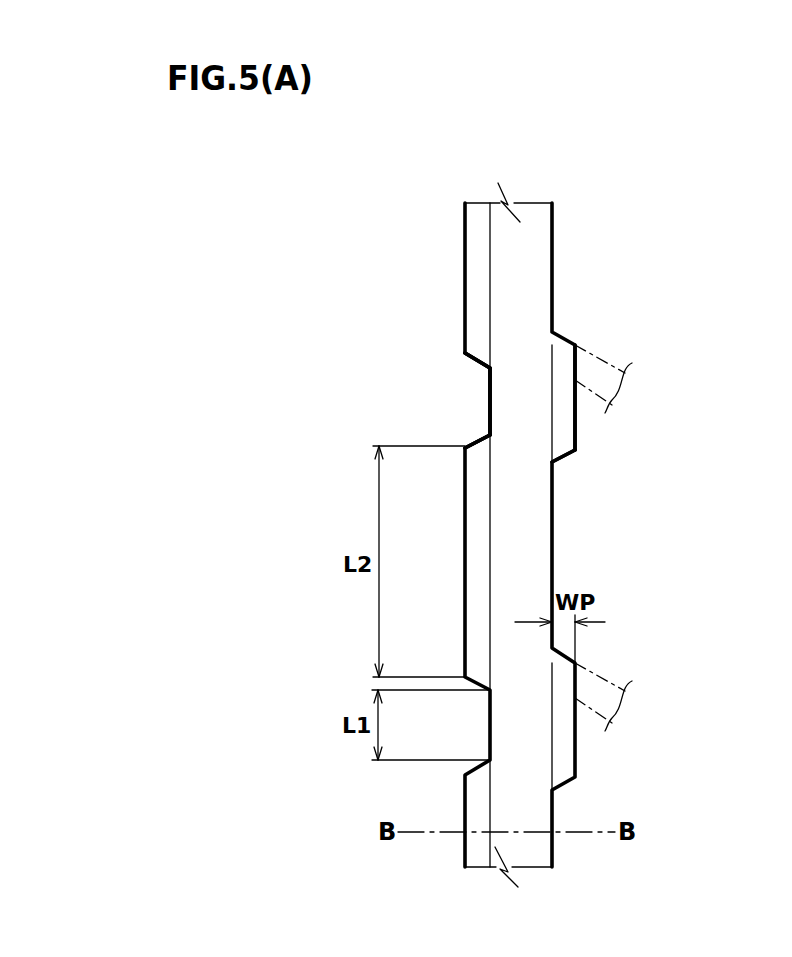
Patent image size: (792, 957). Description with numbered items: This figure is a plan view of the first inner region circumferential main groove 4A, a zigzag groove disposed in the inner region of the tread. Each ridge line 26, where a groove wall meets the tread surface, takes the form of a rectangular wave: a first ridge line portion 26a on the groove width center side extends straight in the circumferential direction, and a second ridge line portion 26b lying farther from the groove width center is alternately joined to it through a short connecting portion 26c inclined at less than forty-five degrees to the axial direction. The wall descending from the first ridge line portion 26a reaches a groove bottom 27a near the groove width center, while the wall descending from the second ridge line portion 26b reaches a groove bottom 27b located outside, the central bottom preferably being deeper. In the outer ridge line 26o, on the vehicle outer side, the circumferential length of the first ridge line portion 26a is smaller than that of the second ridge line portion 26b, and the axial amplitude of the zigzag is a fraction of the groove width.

The first inner region circumferential main groove 4A is at (535, 192).
The ridge line 26 is at (552, 223).
The outer ridge line 26o is at (320, 343).
The first ridge line portion 26a is at (487, 378).
The second ridge line portion 26b is at (463, 478).
The connecting portion 26c is at (478, 435).
The groove bottom 27a is at (528, 310).
The groove bottom 27b is at (478, 262).